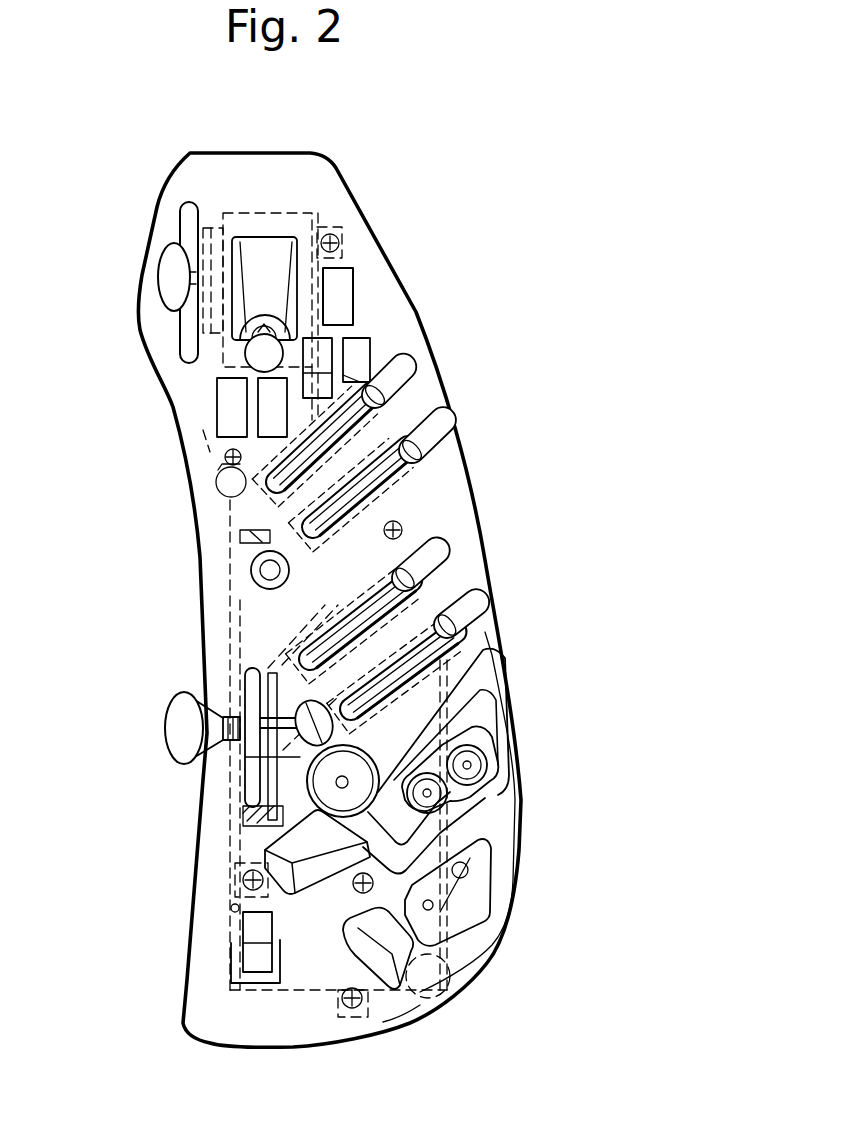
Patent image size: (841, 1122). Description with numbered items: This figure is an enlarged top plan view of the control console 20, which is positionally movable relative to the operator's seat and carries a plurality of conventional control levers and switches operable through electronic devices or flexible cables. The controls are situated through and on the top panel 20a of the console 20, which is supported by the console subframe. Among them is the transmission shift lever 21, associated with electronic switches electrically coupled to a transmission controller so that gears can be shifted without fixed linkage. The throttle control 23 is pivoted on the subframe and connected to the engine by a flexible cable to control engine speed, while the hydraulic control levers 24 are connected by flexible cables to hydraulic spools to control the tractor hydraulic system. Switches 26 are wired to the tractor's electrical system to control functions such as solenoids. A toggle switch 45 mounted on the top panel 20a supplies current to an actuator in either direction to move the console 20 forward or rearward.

The control console 20 is at (392, 130).
The top panel 20a is at (455, 247).
The transmission shift lever 21 is at (255, 355).
The throttle control 23 is at (173, 266).
The hydraulic control levers 24 is at (403, 373).
The switches 26 is at (350, 297).
The toggle switch 45 is at (250, 930).